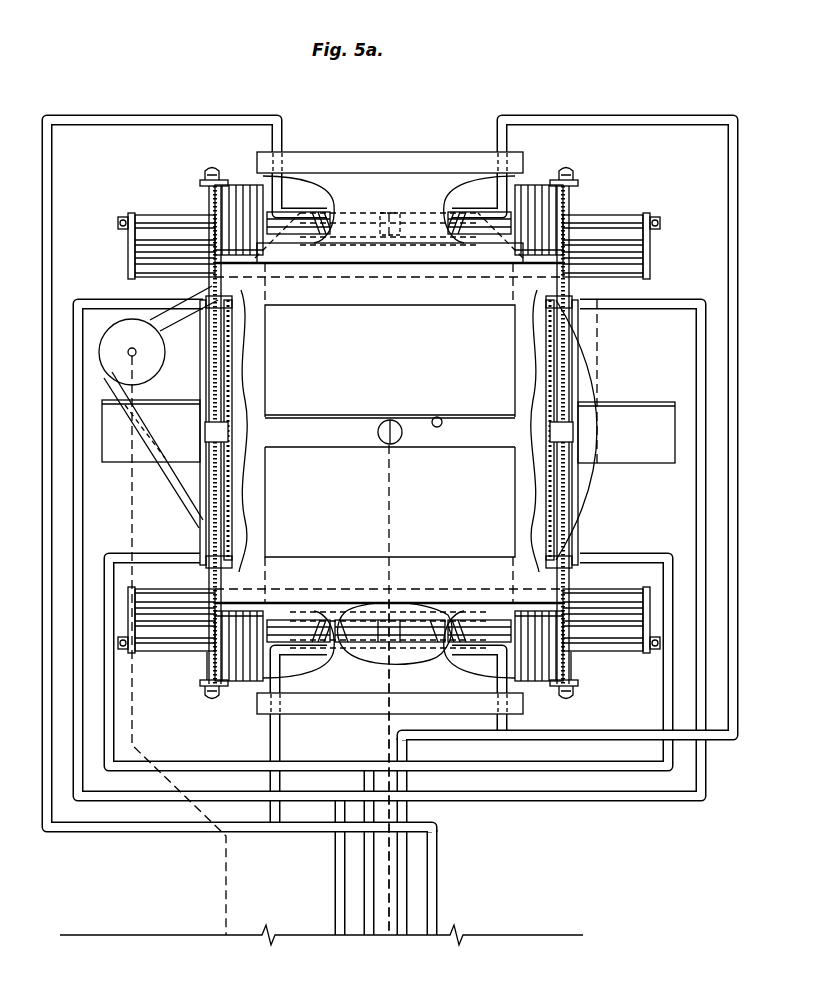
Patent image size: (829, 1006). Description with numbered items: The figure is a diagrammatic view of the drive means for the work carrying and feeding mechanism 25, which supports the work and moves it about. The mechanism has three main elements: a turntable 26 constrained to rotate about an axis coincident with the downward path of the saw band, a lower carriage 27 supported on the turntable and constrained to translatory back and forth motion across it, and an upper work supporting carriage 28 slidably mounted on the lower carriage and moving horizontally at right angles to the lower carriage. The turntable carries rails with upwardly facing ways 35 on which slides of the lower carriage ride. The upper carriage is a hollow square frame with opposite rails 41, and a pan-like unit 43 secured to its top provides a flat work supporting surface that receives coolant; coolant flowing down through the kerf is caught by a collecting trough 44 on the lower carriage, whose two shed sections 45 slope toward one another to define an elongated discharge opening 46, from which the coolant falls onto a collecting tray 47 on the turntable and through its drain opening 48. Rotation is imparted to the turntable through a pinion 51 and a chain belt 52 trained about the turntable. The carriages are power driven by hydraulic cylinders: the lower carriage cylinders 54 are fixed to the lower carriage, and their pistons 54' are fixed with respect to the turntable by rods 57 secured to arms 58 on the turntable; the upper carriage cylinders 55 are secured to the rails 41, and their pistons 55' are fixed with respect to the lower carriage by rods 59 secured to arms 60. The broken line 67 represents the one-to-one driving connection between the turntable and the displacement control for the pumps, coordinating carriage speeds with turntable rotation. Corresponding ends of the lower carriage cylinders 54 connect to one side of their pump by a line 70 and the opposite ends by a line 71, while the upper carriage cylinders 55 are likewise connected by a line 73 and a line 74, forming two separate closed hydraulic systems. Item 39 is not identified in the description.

The work carrying and feeding mechanism 25 is at (449, 104).
The turntable 26 is at (592, 388).
The lower carriage 27 is at (232, 217).
The upper work supporting carriage 28 is at (515, 500).
The ways 35 is at (148, 262).
The lower column 39 is at (250, 688).
The rails 41 is at (525, 358).
The pan-like unit 43 is at (258, 527).
The collecting trough 44 is at (400, 366).
The shed sections 45 is at (378, 167).
The discharge opening 46 is at (438, 418).
The collecting tray 47 is at (645, 460).
The drain opening 48 is at (390, 420).
The pinion 51 is at (150, 346).
The chain belt 52 is at (185, 488).
The lower carriage cylinders 54 is at (389, 430).
The pistons of the lower carriage cylinders 54' is at (391, 432).
The upper carriage cylinders 55 is at (418, 435).
The pistons of the upper carriage cylinders 55' is at (425, 430).
The rods 57 is at (600, 225).
The arms 58 is at (128, 240).
The rods 59 is at (207, 662).
The arms 60 is at (224, 180).
The broken line 67 is at (389, 937).
The line 70 is at (437, 857).
The line 71 is at (407, 890).
The line 73 is at (367, 887).
The line 74 is at (337, 862).